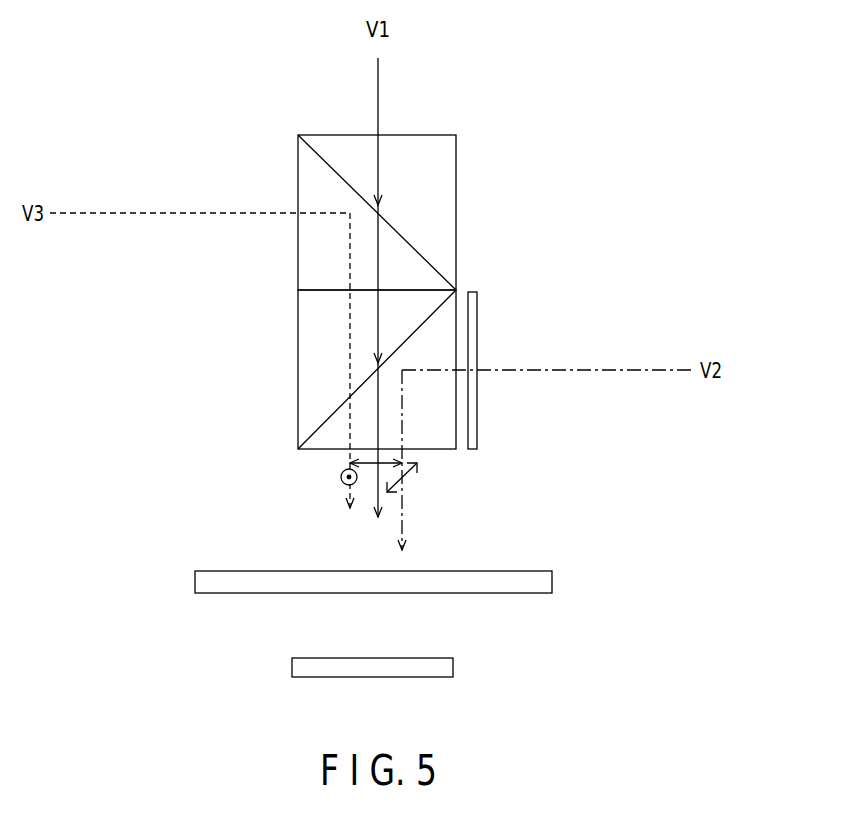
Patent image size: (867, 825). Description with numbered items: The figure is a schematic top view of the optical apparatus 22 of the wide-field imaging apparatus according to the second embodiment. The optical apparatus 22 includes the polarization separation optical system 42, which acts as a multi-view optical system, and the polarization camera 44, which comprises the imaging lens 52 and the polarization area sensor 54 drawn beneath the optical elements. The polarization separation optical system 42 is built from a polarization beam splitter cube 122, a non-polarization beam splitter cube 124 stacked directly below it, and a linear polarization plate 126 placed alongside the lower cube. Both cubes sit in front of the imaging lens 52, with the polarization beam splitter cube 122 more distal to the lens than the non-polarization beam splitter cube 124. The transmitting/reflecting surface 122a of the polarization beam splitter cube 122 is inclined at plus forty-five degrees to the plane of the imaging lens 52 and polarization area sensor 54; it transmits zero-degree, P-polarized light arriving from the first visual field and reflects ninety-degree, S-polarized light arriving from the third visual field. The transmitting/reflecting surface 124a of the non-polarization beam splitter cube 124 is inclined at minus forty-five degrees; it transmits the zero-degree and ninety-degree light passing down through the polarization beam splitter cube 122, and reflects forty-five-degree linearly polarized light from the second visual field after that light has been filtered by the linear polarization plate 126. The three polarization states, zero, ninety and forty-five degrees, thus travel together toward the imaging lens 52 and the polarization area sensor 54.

The optical apparatus 22 is at (170, 400).
The polarization separation optical system 42 is at (555, 223).
The polarization camera 44 is at (177, 569).
The imaging lens 52 is at (552, 583).
The polarization area sensor 54 is at (453, 667).
The polarization beam splitter (PBS) cube 122 is at (405, 187).
The transmitting/reflecting surface 122a is at (326, 160).
The non-polarization beam splitter (NPBS) cube 124 is at (337, 369).
The transmitting/reflecting surface 124a is at (318, 420).
The linear polarization plate 126 is at (477, 334).